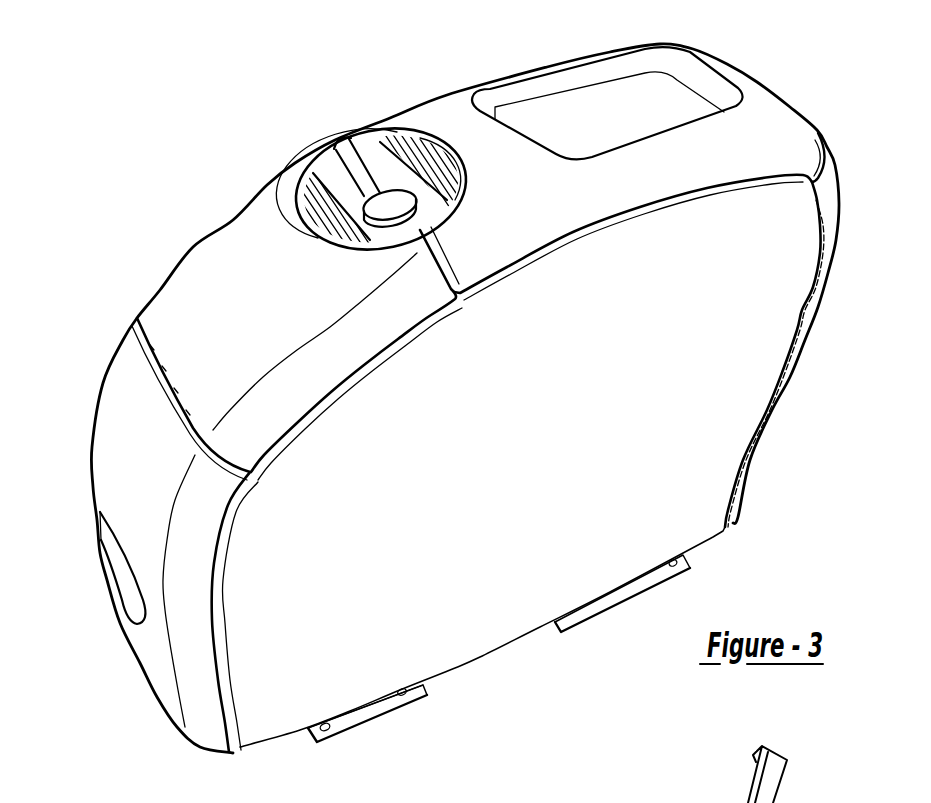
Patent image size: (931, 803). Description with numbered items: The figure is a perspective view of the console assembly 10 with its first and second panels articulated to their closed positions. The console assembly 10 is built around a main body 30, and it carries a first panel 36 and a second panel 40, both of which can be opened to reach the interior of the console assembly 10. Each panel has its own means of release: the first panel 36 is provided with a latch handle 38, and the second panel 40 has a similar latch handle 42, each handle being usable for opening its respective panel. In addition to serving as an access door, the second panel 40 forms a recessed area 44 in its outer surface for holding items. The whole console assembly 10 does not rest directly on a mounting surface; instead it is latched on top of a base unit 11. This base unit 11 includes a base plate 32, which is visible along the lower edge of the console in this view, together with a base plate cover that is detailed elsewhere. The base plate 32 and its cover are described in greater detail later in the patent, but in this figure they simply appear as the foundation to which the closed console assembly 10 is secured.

The console assembly 10 is at (148, 102).
The base unit 11 is at (407, 711).
The main body 30 is at (690, 420).
The base plate 32 is at (343, 727).
The first panel 36 is at (218, 266).
The latch handle 38 is at (333, 203).
The second panel 40 is at (494, 143).
The latch handle 42 is at (433, 160).
The recessed area 44 is at (588, 103).